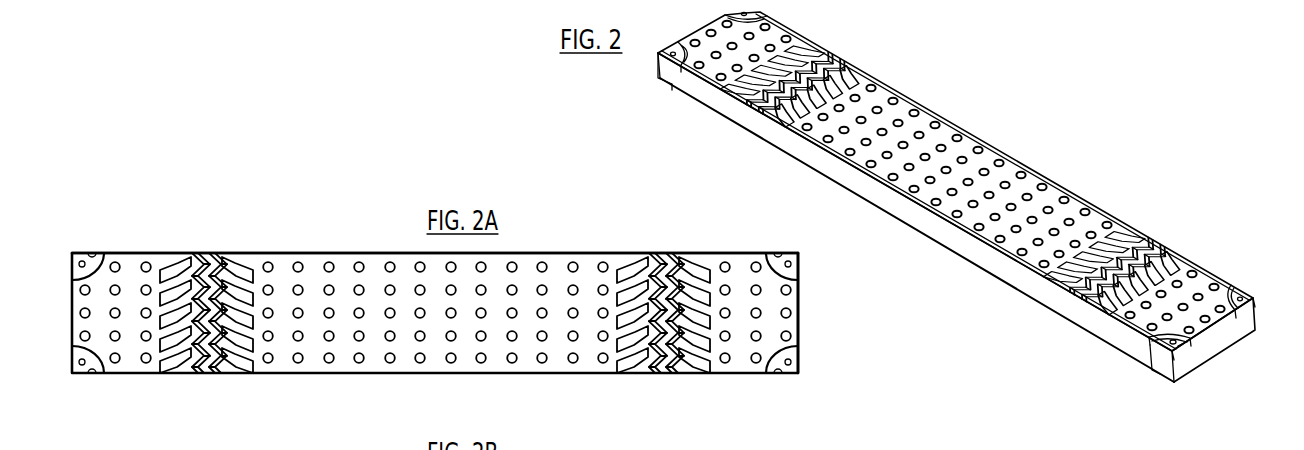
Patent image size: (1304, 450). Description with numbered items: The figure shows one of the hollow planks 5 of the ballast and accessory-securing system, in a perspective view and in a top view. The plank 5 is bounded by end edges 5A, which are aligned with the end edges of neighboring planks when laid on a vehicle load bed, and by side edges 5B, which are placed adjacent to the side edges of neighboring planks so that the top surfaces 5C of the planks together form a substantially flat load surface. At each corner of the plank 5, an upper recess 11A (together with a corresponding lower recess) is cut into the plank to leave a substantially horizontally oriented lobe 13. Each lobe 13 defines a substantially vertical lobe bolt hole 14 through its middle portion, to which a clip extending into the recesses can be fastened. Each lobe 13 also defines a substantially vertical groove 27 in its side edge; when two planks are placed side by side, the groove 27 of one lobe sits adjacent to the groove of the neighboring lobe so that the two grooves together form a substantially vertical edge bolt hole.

In FIG. 2A, the plank 5 is at (677, 381).
In FIG. 2, the plank 5 is at (893, 76).
In FIG. 2A, the end edge 5A is at (801, 301).
In FIG. 2, the end edge 5A is at (1217, 342).
In FIG. 2A, the side edge 5B is at (559, 253).
In FIG. 2, the side edge 5B is at (1028, 283).
In FIG. 2A, the top surface 5C is at (283, 278).
In FIG. 2, the top surface 5C is at (1008, 177).
In FIG. 2A, the upper recess 11A is at (775, 264).
In FIG. 2A, the lobe 13 is at (797, 373).
In FIG. 2, the lobe 13 is at (1160, 372).
In FIG. 2A, the lobe bolt hole 14 is at (797, 359).
In FIG. 2A, the groove 27 is at (778, 374).
In FIG. 2, the groove 27 is at (1150, 367).